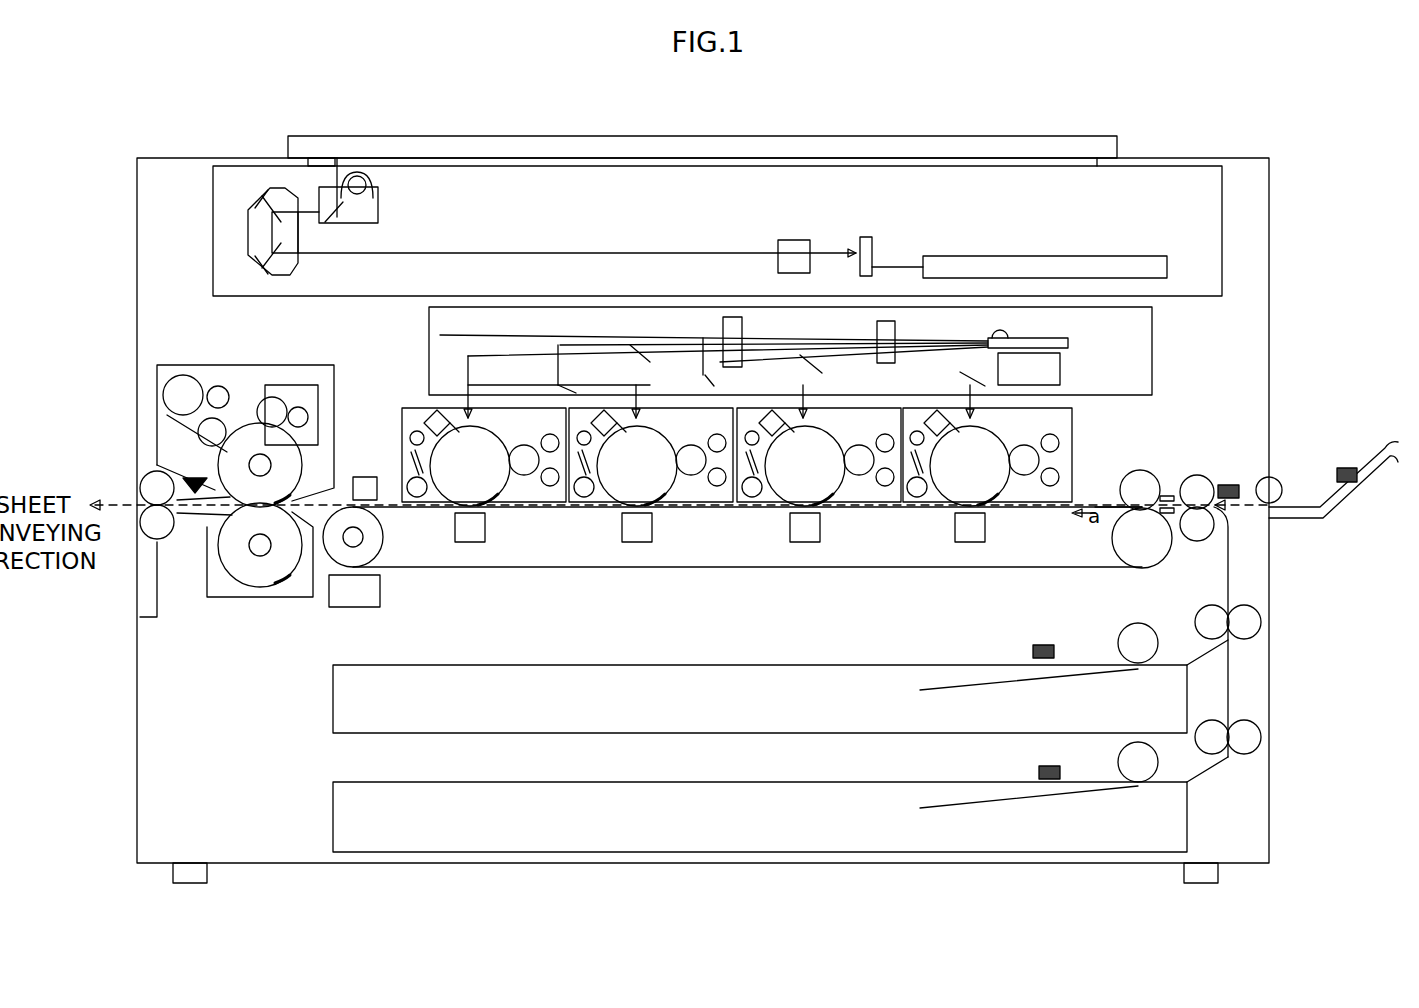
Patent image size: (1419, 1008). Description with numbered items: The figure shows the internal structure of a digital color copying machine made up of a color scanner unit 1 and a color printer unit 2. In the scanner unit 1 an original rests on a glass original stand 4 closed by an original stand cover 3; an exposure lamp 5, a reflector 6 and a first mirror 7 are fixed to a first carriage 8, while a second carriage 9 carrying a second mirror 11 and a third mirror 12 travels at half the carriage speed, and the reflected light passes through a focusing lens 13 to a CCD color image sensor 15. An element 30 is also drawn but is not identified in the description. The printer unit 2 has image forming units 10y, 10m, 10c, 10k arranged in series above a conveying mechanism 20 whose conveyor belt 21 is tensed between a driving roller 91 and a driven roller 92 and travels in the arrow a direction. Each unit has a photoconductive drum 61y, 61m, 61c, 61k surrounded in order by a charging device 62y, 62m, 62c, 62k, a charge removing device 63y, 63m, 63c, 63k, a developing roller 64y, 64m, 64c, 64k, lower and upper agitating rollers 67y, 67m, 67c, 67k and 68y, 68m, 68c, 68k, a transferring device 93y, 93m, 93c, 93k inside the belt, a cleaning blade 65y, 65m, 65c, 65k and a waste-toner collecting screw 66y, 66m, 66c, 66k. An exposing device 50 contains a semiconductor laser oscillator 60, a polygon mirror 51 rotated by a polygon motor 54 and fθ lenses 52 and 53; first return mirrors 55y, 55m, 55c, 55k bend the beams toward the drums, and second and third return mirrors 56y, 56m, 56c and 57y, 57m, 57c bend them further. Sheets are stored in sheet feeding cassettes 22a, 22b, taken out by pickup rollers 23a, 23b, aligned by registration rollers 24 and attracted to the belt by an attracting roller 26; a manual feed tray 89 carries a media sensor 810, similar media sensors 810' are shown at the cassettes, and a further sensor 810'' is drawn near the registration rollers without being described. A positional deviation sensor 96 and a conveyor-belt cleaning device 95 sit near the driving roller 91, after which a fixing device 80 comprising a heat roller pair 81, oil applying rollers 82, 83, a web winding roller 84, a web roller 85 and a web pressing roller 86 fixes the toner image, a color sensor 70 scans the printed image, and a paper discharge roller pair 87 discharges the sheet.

The color scanner unit 1 is at (592, 170).
The color printer unit 2 is at (347, 330).
The original stand cover 3 is at (490, 138).
The original stand 4 is at (717, 194).
The exposure lamp 5 is at (368, 182).
The reflector 6 is at (378, 213).
The first mirror 7 is at (339, 222).
The first carriage 8 is at (376, 195).
The second carriage 9 is at (297, 272).
The image forming unit (black) 10k is at (455, 491).
The image forming unit (cyan) 10c is at (651, 481).
The image forming unit (magenta) 10m is at (819, 481).
The image forming unit (yellow) 10y is at (1007, 481).
The second mirror 11 is at (268, 199).
The third mirror 12 is at (266, 264).
The focusing lens 13 is at (794, 240).
The CCD color image sensor 15 is at (866, 237).
The conveying mechanism 20 is at (747, 543).
The conveyor belt 21 is at (1115, 507).
The sheet feeding cassette 22a is at (333, 698).
The sheet feeding cassette 22b is at (333, 816).
The pickup roller 23a is at (1118, 640).
The pickup roller 23b is at (1118, 762).
The registration rollers 24 is at (1200, 475).
The attracting roller 26 is at (1146, 470).
The control section 30 is at (1035, 255).
The exposing device 50 is at (814, 348).
The polygon mirror 51 is at (1070, 344).
The fθ lens 52 is at (897, 334).
The fθ lens 53 is at (745, 330).
The polygon motor 54 is at (1062, 367).
The first return mirror (black) 55k is at (468, 358).
The first return mirror (cyan) 55c is at (556, 348).
The first return mirror (magenta) 55m is at (700, 332).
The first return mirror (yellow) 55y is at (735, 318).
The second return mirror (cyan) 56c is at (556, 390).
The second return mirror (magenta) 56m is at (700, 345).
The second return mirror (yellow) 56y is at (710, 394).
The third return mirror (cyan) 57c is at (640, 350).
The third return mirror (magenta) 57m is at (810, 380).
The third return mirror (yellow) 57y is at (1048, 380).
The semiconductor laser oscillator 60 is at (1006, 336).
The photoconductive drum (black) 61k is at (478, 426).
The photoconductive drum (cyan) 61c is at (650, 444).
The photoconductive drum (magenta) 61m is at (822, 444).
The photoconductive drum (yellow) 61y is at (1010, 445).
The charging device (black) 62k is at (426, 410).
The charging device (cyan) 62c is at (625, 406).
The charging device (magenta) 62m is at (860, 408).
The charging device (yellow) 62y is at (955, 408).
The charge removing device (black) 63k is at (412, 432).
The charge removing device (cyan) 63c is at (600, 414).
The charge removing device (magenta) 63m is at (773, 412).
The charge removing device (yellow) 63y is at (937, 412).
The developing roller (black) 64k is at (524, 476).
The developing roller (cyan) 64c is at (691, 477).
The developing roller (magenta) 64m is at (859, 477).
The developing roller (yellow) 64y is at (1020, 477).
The cleaning blade (black) 65k is at (410, 440).
The cleaning blade (cyan) 65c is at (582, 448).
The cleaning blade (magenta) 65m is at (752, 448).
The cleaning blade (yellow) 65y is at (917, 448).
The waste-toner collecting screw (black) 66k is at (407, 481).
The waste-toner collecting screw (cyan) 66c is at (586, 498).
The waste-toner collecting screw (magenta) 66m is at (752, 498).
The waste-toner collecting screw (yellow) 66y is at (920, 498).
The lower agitating roller (black) 67k is at (550, 487).
The lower agitating roller (cyan) 67c is at (716, 488).
The lower agitating roller (magenta) 67m is at (886, 488).
The lower agitating roller (yellow) 67y is at (1052, 488).
The upper agitating roller (black) 68k is at (541, 443).
The upper agitating roller (cyan) 68c is at (718, 454).
The upper agitating roller (magenta) 68m is at (886, 443).
The upper agitating roller (yellow) 68y is at (1061, 444).
The color sensor 70 is at (260, 465).
The fixing device 80 is at (277, 487).
The heat roller pair 81 is at (262, 590).
The oil applying roller 82 is at (298, 407).
The oil applying roller 83 is at (272, 397).
The web winding roller 84 is at (218, 386).
The web roller 85 is at (183, 375).
The web pressing roller 86 is at (198, 448).
The paper discharge roller pair 87 is at (165, 540).
The manual feed tray 89 is at (1348, 516).
The driving roller 91 is at (382, 562).
The driven roller 92 is at (1136, 566).
The transferring device (black) 93k is at (462, 544).
The transferring device (cyan) 93c is at (630, 544).
The transferring device (magenta) 93m is at (806, 544).
The transferring device (yellow) 93y is at (966, 544).
The conveyor-belt cleaning device 95 is at (360, 608).
The positional deviation sensor 96 is at (378, 500).
The media sensor 810 is at (1353, 454).
The media sensor 810' is at (1011, 711).
The sheet detection sensor 810'' is at (1244, 469).